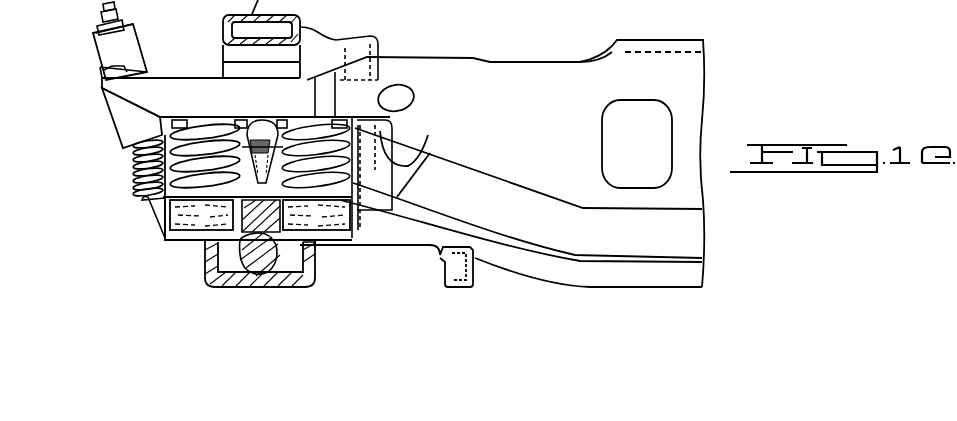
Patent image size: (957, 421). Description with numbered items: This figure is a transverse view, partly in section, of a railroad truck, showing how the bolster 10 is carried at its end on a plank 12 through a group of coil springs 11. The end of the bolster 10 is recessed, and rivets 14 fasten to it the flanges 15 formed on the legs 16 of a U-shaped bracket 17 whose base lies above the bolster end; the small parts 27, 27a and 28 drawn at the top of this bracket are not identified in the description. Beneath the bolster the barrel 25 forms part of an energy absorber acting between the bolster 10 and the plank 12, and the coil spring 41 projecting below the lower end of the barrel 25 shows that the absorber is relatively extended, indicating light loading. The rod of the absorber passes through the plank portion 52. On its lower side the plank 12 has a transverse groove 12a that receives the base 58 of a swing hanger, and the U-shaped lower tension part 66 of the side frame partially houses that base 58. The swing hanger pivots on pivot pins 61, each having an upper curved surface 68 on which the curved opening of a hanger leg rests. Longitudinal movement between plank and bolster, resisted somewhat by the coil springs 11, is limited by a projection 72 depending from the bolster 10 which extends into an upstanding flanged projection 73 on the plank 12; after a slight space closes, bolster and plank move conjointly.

The bolster 10 is at (528, 68).
The coil springs 11 is at (347, 122).
The plank 12 is at (400, 238).
The transverse groove 12a is at (210, 243).
The rivets 14 is at (107, 68).
The flanges 15 is at (147, 75).
The legs 16 is at (130, 48).
The U-shaped bracket 17 is at (85, 55).
The barrel 25 is at (125, 118).
The nut 27 is at (97, 28).
The lock nut 27a is at (103, 7).
The terminal 28 is at (92, 16).
The coil spring 41 is at (131, 173).
The plank portion 52 is at (140, 208).
The swing hanger base 58 is at (232, 290).
The pivot pins 61 is at (254, 126).
The lower tension part 66 is at (318, 280).
The upper curved surface 68 is at (252, 130).
The projection 72 is at (403, 180).
The upstanding flanged projection 73 is at (370, 133).